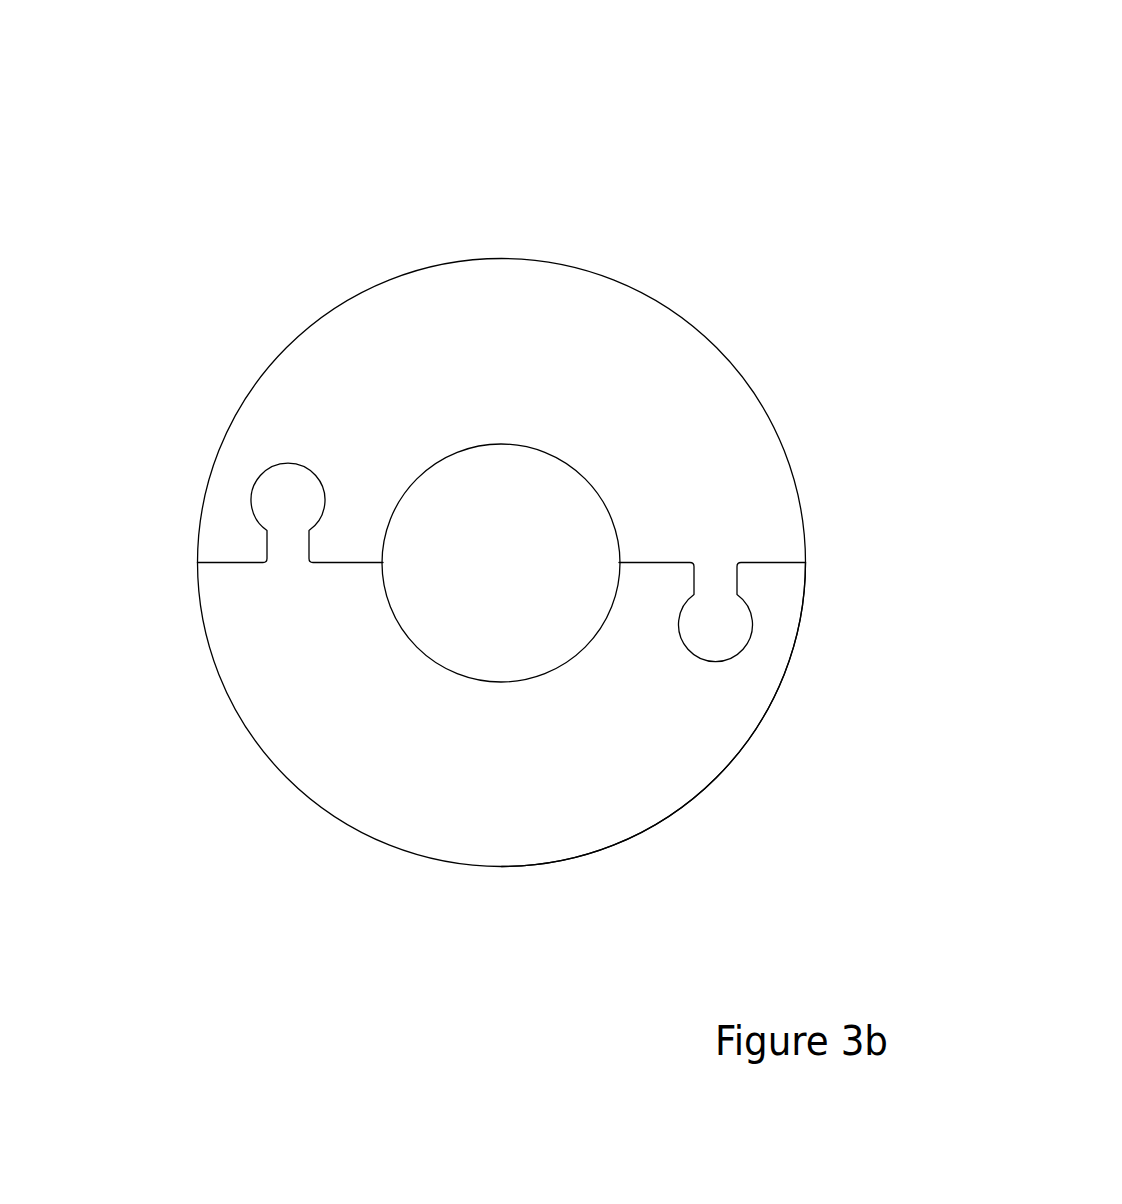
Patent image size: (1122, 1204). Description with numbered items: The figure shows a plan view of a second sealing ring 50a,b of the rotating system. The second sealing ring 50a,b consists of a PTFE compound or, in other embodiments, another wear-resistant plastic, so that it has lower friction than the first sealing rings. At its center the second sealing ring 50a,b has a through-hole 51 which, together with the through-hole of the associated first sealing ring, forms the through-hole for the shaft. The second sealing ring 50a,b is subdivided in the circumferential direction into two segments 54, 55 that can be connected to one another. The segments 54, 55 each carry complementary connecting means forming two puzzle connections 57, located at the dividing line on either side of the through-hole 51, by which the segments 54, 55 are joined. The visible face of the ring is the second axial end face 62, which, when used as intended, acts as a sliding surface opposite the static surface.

The second sealing ring 50a,b is at (557, 188).
The through-hole 51 is at (400, 504).
The segment 54 is at (660, 403).
The segment 55 is at (405, 784).
The puzzle connection 57 is at (247, 533).
The second axial end face 62 is at (577, 755).